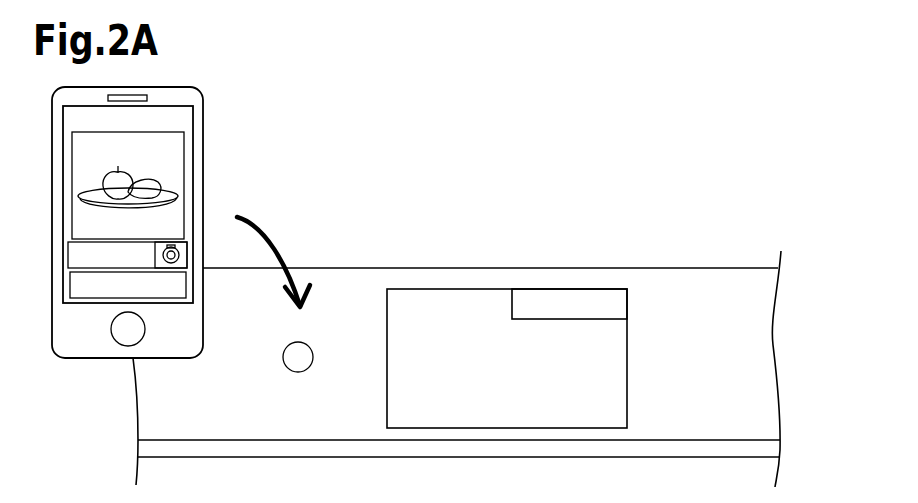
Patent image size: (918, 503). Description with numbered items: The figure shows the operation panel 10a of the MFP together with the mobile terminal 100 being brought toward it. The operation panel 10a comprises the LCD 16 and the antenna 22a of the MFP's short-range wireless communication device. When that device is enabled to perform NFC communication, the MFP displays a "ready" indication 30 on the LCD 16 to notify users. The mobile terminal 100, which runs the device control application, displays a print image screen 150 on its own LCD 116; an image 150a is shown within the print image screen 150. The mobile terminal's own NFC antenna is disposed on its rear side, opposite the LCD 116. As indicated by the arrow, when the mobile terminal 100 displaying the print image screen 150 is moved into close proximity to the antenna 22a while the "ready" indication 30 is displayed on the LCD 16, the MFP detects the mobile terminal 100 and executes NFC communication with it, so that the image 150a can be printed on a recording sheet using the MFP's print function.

The operation panel 10a is at (710, 234).
The LCD 16 is at (432, 289).
The "ready" indication 30 is at (627, 306).
The antenna 22a is at (311, 352).
The mobile terminal 100 is at (203, 322).
The LCD 116 is at (193, 176).
The print image screen 150 is at (183, 120).
The image 150a is at (173, 142).